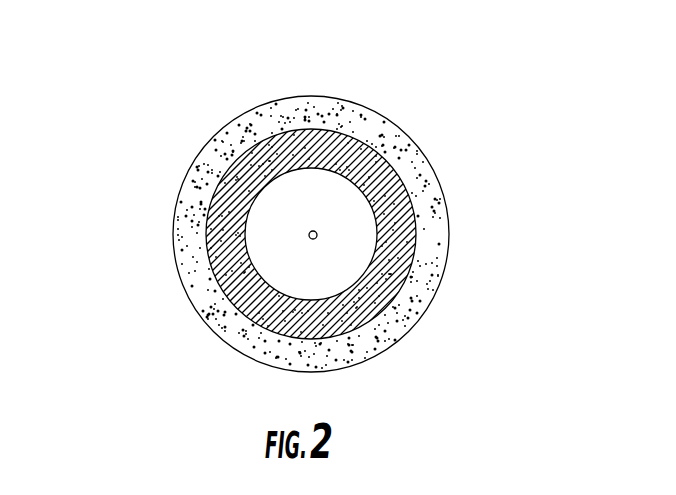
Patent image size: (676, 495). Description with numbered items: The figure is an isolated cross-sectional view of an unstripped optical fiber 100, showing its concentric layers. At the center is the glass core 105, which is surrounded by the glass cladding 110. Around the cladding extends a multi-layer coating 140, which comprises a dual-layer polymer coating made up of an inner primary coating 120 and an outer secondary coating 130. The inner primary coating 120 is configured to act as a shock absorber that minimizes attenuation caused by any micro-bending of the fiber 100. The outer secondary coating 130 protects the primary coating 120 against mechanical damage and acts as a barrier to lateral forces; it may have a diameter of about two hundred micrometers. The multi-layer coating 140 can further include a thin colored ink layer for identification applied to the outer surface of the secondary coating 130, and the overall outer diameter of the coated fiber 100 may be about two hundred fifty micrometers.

The optical fiber 100 is at (136, 209).
The glass core 105 is at (317, 234).
The glass cladding 110 is at (336, 252).
The inner primary coating 120 is at (395, 175).
The outer secondary coating 130 is at (378, 116).
The multi-layer coating 140 is at (343, 88).